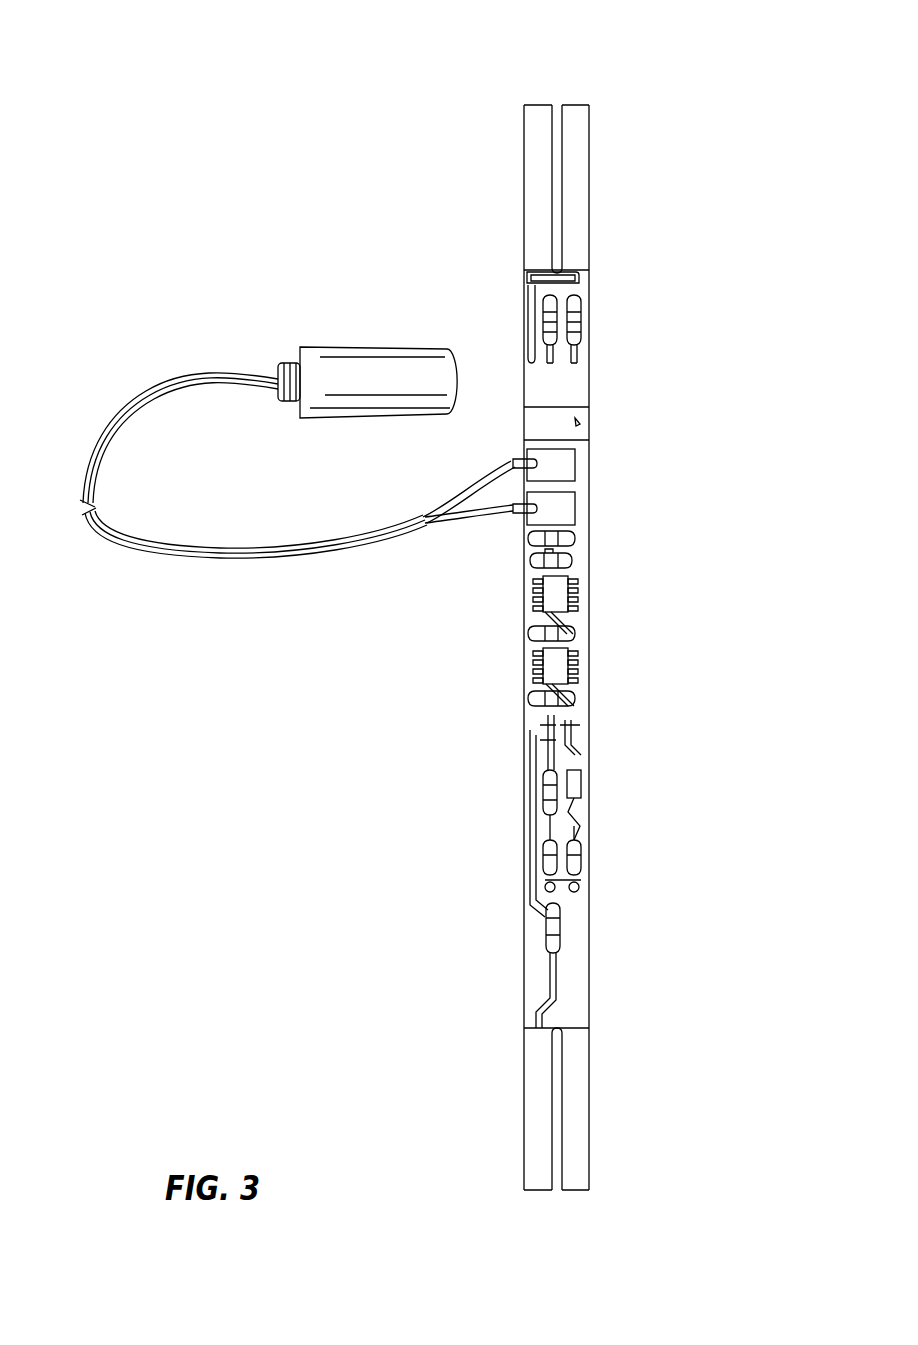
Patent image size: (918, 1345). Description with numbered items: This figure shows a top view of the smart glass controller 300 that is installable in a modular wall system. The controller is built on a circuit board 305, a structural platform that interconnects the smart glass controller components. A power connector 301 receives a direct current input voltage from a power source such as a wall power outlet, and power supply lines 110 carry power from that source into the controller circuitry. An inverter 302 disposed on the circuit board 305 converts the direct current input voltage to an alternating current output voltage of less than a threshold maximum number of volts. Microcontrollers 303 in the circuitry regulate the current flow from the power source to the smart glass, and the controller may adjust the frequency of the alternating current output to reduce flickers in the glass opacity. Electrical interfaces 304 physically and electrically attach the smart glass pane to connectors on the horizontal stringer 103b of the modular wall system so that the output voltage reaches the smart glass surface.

The light strip assembly 300 is at (710, 140).
The power connector 301 is at (380, 358).
The power inverter 302 is at (618, 442).
The microcontrollers 303 is at (524, 832).
The electrical interface 304 is at (575, 218).
The circuit board 305 is at (727, 303).
The integrated circuit 103b is at (608, 548).
The power supply lines 110 is at (295, 556).